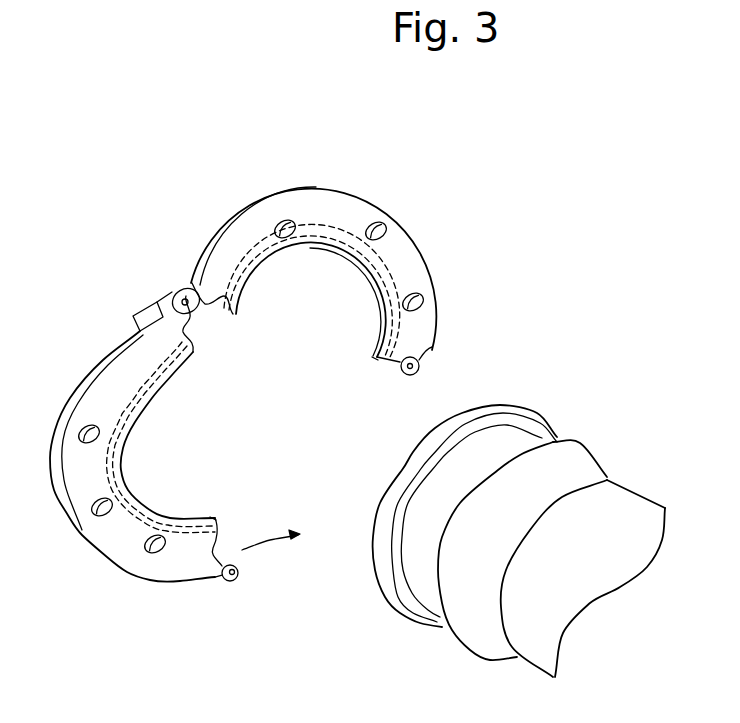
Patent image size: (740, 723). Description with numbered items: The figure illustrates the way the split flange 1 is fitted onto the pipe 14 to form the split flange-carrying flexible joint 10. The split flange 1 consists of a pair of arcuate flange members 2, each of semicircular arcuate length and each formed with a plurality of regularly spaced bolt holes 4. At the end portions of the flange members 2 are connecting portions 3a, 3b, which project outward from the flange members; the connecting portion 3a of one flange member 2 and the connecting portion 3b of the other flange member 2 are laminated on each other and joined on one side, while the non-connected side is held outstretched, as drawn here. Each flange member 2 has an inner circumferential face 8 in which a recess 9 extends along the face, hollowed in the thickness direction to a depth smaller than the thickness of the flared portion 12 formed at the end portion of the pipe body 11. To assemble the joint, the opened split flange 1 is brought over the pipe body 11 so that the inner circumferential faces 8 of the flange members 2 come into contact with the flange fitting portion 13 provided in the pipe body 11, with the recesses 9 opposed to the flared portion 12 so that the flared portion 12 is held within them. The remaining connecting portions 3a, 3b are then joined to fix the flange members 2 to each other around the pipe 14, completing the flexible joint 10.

The split flange 1 is at (287, 172).
The flange member 2 is at (355, 191).
The connecting portion 3a is at (167, 289).
The connecting portion 3b is at (193, 287).
The bolt hole 4 is at (382, 225).
The inner circumferential face 8 is at (372, 355).
The recess 9 is at (372, 303).
The split flange-carrying flexible joint 10 is at (590, 219).
The pipe body 11 is at (583, 577).
The flared portion 12 is at (432, 432).
The flange fitting portion 13 is at (417, 547).
The pipe 14 is at (630, 481).